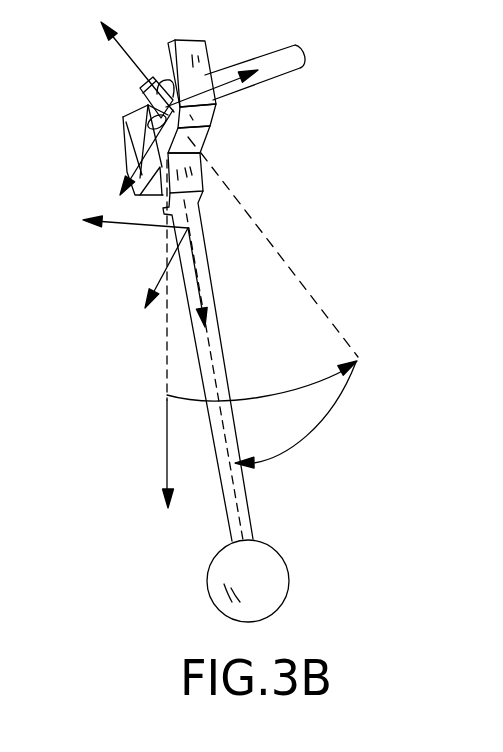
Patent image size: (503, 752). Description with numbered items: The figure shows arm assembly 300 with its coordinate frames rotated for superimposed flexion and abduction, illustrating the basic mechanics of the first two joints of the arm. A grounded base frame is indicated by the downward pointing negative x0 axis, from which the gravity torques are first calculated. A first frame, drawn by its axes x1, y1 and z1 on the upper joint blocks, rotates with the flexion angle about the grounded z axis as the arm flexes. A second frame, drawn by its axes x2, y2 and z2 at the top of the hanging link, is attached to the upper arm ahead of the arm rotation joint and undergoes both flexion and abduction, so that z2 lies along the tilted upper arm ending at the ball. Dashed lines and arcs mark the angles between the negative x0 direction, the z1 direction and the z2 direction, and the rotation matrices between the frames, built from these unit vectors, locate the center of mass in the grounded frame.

The arm assembly 300 is at (273, 322).
The x1-axis x1 is at (131, 67).
The y1-axis y1 is at (222, 91).
The z1-axis z1 is at (133, 152).
The x2-axis x2 is at (127, 231).
The y2-axis y2 is at (151, 268).
The z2-axis z2 is at (215, 277).
The x0-axis x0 is at (149, 454).